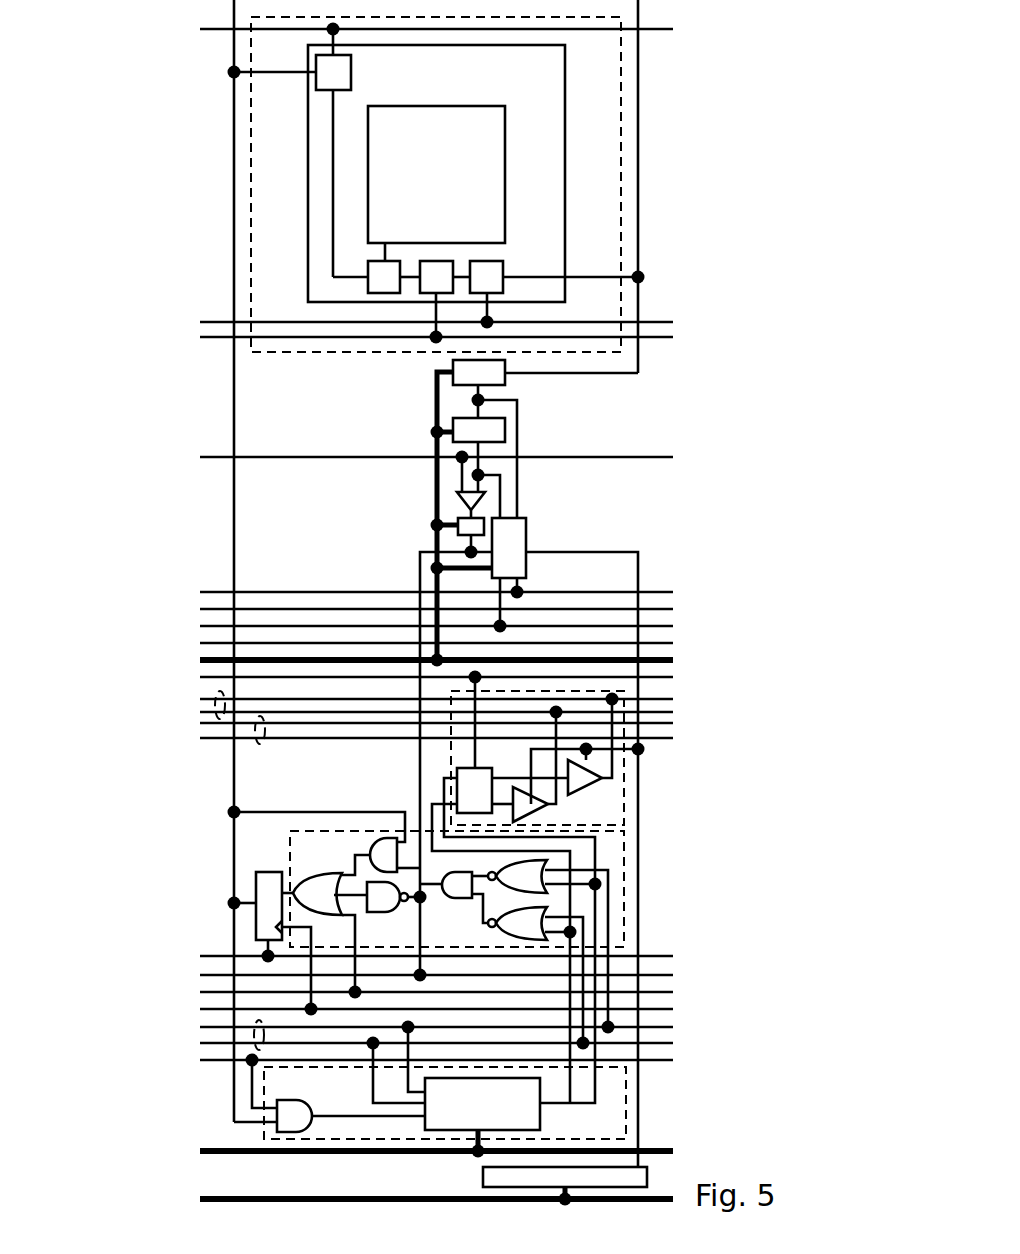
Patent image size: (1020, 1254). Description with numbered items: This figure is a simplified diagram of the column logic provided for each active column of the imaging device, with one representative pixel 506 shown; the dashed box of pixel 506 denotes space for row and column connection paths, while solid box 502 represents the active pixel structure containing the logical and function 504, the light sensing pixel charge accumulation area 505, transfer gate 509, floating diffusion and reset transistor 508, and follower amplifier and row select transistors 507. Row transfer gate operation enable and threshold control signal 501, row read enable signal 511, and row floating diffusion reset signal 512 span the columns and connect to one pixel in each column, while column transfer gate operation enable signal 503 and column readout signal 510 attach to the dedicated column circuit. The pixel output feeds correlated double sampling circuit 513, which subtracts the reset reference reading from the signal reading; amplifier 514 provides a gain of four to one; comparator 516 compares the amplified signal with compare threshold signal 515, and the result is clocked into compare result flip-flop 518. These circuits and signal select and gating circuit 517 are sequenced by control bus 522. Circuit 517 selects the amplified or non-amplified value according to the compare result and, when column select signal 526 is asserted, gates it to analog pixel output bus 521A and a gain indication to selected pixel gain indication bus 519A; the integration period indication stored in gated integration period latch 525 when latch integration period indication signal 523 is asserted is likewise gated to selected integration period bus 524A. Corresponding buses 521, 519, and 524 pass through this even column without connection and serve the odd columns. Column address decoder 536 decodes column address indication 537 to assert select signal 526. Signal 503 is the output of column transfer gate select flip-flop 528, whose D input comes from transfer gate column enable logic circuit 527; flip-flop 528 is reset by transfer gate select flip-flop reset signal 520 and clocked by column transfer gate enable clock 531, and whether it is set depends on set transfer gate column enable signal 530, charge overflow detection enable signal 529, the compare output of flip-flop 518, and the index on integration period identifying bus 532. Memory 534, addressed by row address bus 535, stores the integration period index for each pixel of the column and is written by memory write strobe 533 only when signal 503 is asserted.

The row transfer gate operation enable and threshold control signal 501 is at (200, 30).
The active pixel structure 502 is at (306, 57).
The column transfer gate operation enable signal 503 is at (232, 92).
The and function 504 is at (312, 87).
The light sensing pixel charge accumulation area 505 is at (363, 130).
The pixel 506 is at (248, 162).
The follower amplifier and row select transistors 507 is at (480, 256).
The floating diffusion and reset transistor 508 is at (428, 256).
The transfer gate 509 is at (365, 267).
The column readout signal 510 is at (645, 305).
The row read enable signal 511 is at (200, 322).
The row floating diffusion reset signal 512 is at (200, 337).
The correlated double sampling circuit 513 is at (450, 363).
The amplifier 514 is at (450, 419).
The compare threshold signal 515 is at (200, 457).
The comparator 516 is at (452, 497).
The signal select and gating circuit 517 is at (530, 532).
The compare result flip-flop 518 is at (455, 514).
The selected pixel gain indication bus 519A is at (200, 592).
The selected pixel gain indication bus for odd columns 519 is at (200, 609).
The analog pixel output bus 521A is at (200, 626).
The analog pixel output bus for odd columns 521 is at (200, 643).
The control bus 522 is at (200, 660).
The latch integration period indication signal 523 is at (200, 677).
The selected integration period bus 524A is at (215, 713).
The selected integration period bus for odd columns 524 is at (255, 745).
The gated integration period latch 525 is at (630, 792).
The column select signal 526 is at (645, 831).
The transfer gate column enable logic circuit 527 is at (285, 845).
The column transfer gate select flip-flop 528 is at (252, 890).
The transfer gate select flip-flop reset signal 520 is at (200, 956).
The charge overflow detection enable signal 529 is at (200, 975).
The set transfer gate column enable signal 530 is at (200, 992).
The column transfer gate enable clock 531 is at (200, 1009).
The integration period identifying index bus 532 is at (250, 1035).
The memory write strobe 533 is at (200, 1060).
The memory 534 is at (630, 1105).
The row address bus 535 is at (200, 1151).
The column address decoder 536 is at (483, 1178).
The column address indication 537 is at (200, 1199).